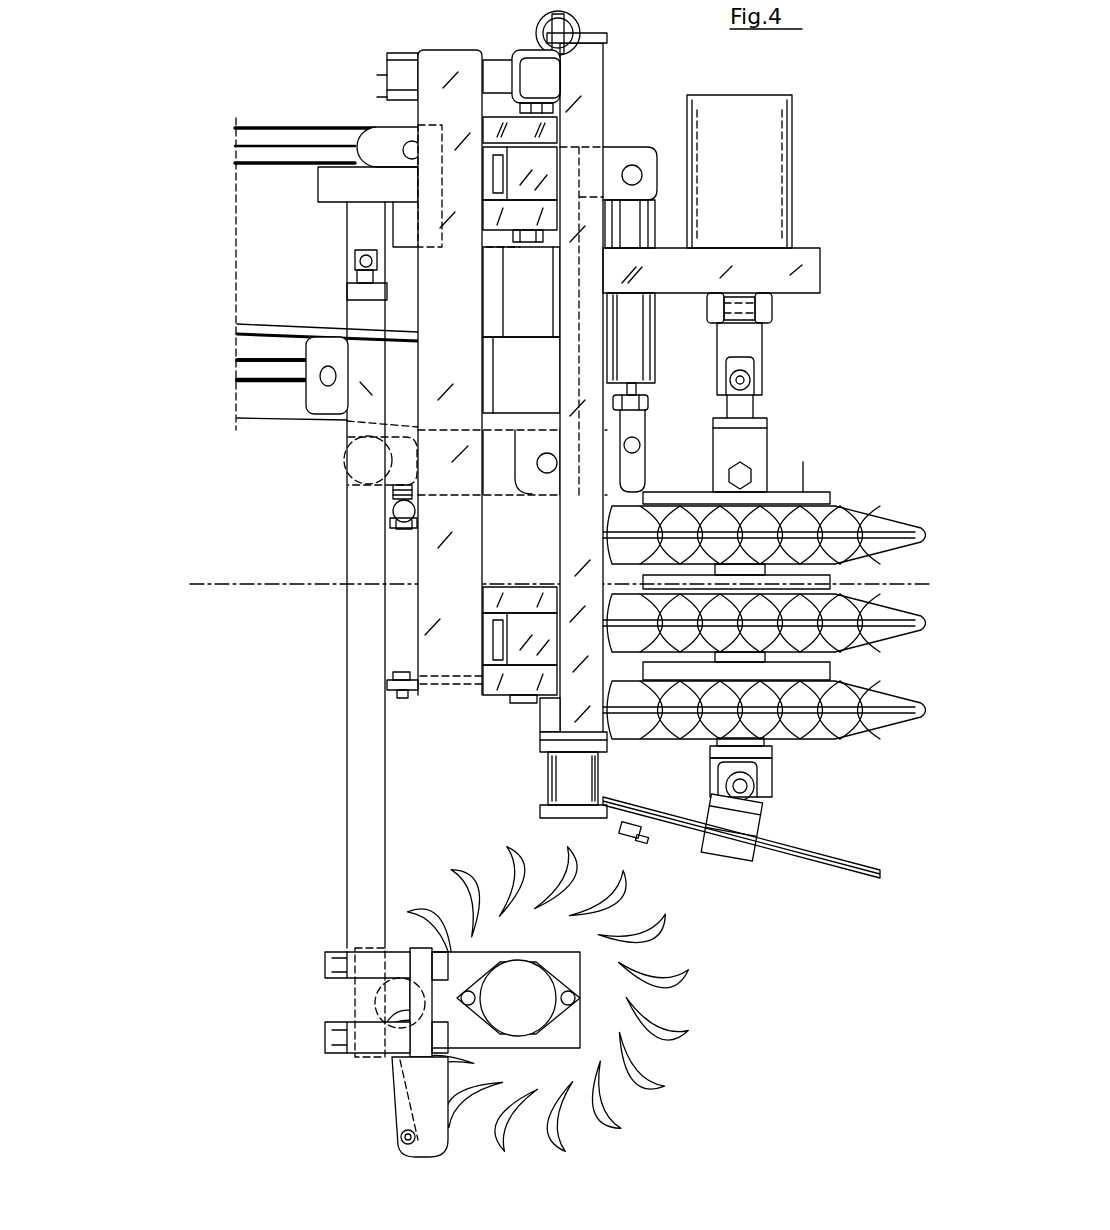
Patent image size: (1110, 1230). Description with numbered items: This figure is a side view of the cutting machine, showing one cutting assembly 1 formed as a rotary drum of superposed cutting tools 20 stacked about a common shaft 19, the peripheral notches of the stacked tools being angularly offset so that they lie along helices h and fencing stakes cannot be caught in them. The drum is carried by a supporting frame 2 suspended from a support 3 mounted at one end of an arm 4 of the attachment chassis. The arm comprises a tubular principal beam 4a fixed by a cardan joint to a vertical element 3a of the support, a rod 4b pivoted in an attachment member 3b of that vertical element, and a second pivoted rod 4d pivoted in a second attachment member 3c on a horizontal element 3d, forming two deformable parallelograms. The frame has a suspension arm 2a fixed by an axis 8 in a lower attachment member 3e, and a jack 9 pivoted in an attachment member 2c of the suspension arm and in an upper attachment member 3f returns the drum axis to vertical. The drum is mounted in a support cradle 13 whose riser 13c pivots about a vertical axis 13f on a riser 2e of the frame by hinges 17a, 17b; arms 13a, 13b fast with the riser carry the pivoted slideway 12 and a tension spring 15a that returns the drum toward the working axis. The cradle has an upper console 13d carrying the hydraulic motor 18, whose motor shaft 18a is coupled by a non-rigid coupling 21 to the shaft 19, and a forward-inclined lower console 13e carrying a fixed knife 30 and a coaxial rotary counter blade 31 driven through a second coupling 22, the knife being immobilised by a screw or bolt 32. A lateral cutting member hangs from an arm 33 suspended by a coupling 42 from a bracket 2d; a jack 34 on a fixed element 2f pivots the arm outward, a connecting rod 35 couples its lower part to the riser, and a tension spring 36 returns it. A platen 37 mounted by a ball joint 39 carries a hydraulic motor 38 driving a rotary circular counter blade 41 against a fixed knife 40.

The cutting assembly 1 is at (789, 480).
The supporting frame 2 is at (407, 317).
The suspension arm 2a is at (497, 480).
The attachment member 2c is at (768, 428).
The bracket 2d is at (337, 177).
The riser 2e is at (437, 610).
The fixed element 2f is at (393, 505).
The support 3 is at (495, 270).
The vertical element 3a is at (520, 260).
The attachment member 3b is at (400, 132).
The second attachment member 3c is at (323, 403).
The horizontal element 3d is at (398, 385).
The lower attachment member 3e is at (545, 437).
The upper attachment member 3f is at (650, 160).
The arm 4 is at (262, 430).
The principal beam 4a is at (252, 400).
The rod 4b is at (257, 112).
The second pivoted rod 4d is at (279, 382).
The axis 8 is at (557, 462).
The jack 9 is at (630, 222).
The slideway 12 is at (497, 65).
The support cradle 13 is at (555, 727).
The arm 13a is at (600, 75).
The arm 13b is at (390, 58).
The riser 13c is at (590, 110).
The upper console 13d is at (783, 257).
The lower console 13e is at (692, 838).
The vertical pivoting axis 13f is at (567, 147).
The tension spring 15a is at (582, 26).
The hinge 17a is at (487, 127).
The hinge 17b is at (513, 700).
The hydraulic motor 18 is at (773, 110).
The motor shaft 18a is at (757, 312).
The common shaft 19 is at (757, 750).
The cutting tool 20 is at (863, 513).
The non-rigid coupling 21 is at (773, 370).
The non-rigid coupling 22 is at (779, 798).
The fixed knife 30 is at (823, 864).
The rotary counter blade 31 is at (852, 866).
The screw or bolt 32 is at (643, 838).
The arm 33 is at (373, 797).
The jack 34 is at (402, 465).
The pivoted connecting rod 35 is at (415, 687).
The tension spring 36 is at (393, 509).
The platen 37 is at (363, 1062).
The hydraulic motor 38 is at (497, 997).
The ball joint 39 is at (397, 998).
The fixed knife 40 is at (653, 1057).
The rotary circular counter blade 41 is at (607, 1005).
The non-rigid coupling 42 is at (345, 274).
The helix h is at (809, 479).